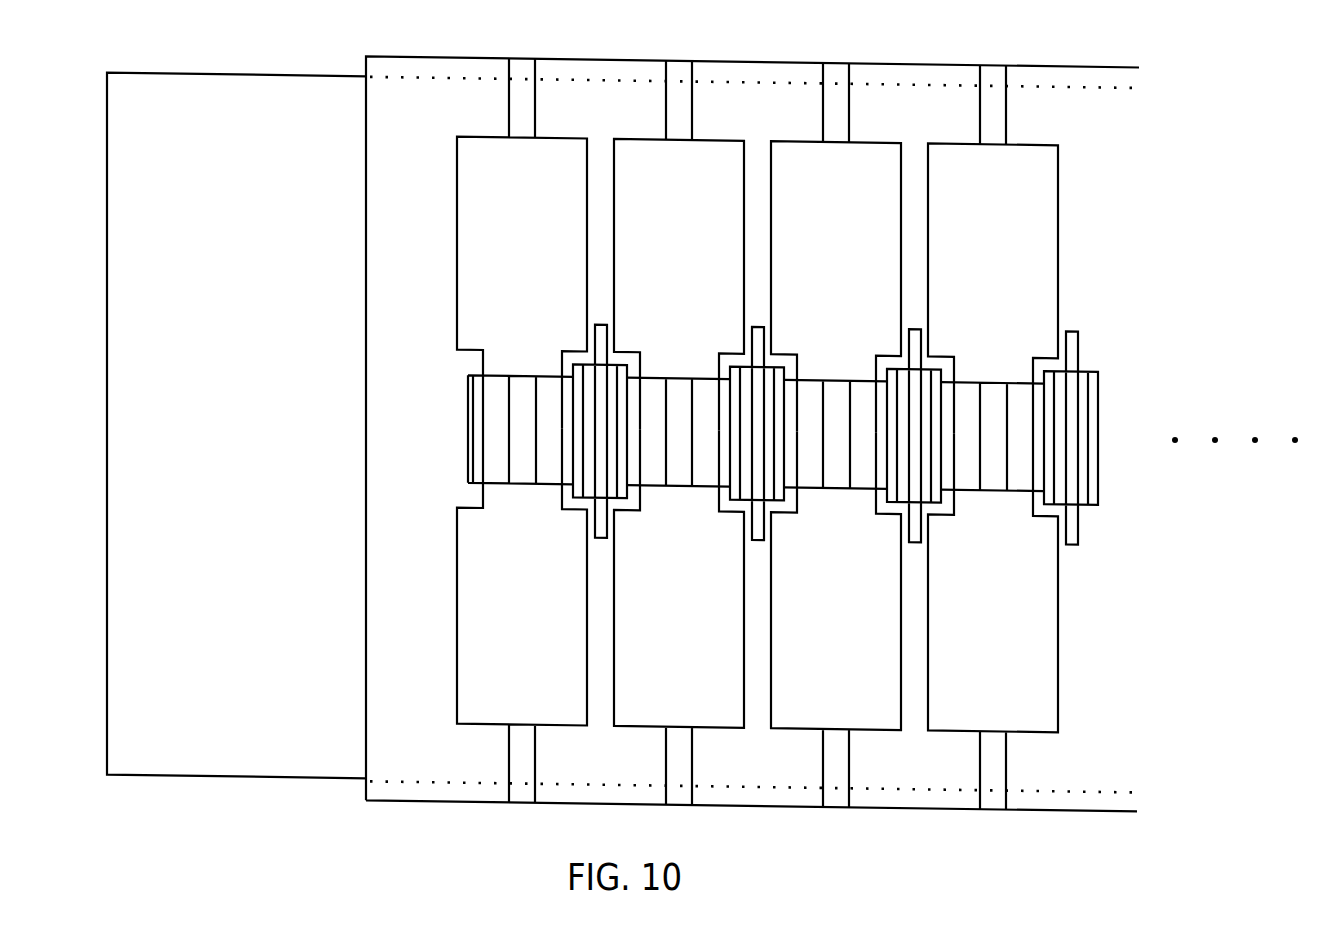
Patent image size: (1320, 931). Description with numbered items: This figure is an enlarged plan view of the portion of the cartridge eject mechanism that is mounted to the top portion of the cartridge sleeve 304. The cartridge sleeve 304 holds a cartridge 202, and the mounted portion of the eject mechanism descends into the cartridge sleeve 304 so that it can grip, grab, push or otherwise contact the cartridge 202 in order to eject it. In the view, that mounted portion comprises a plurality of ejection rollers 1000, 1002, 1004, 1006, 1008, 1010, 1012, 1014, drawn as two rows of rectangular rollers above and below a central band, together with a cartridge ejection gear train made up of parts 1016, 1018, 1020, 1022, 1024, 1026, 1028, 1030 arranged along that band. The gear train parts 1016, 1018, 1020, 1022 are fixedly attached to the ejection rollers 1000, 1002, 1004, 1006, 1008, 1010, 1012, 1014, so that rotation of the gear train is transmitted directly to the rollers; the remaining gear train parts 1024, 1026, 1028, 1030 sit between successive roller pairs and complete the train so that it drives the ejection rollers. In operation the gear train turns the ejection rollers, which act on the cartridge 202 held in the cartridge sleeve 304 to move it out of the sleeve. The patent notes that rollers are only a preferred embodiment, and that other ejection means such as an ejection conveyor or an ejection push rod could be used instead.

The cartridge 202 is at (106, 441).
The cartridge sleeve 304 is at (483, 56).
The ejection roller 1000 is at (557, 275).
The ejection roller 1002 is at (711, 277).
The ejection roller 1004 is at (867, 278).
The ejection roller 1006 is at (1023, 281).
The ejection roller 1008 is at (552, 660).
The ejection roller 1010 is at (710, 663).
The ejection roller 1012 is at (865, 666).
The ejection roller 1014 is at (1018, 670).
The gear train part 1016 is at (505, 486).
The gear train part 1018 is at (665, 487).
The gear train part 1020 is at (823, 488).
The gear train part 1022 is at (980, 488).
The gear train part 1024 is at (630, 372).
The gear train part 1026 is at (786, 373).
The gear train part 1028 is at (942, 375).
The gear train part 1030 is at (1099, 375).